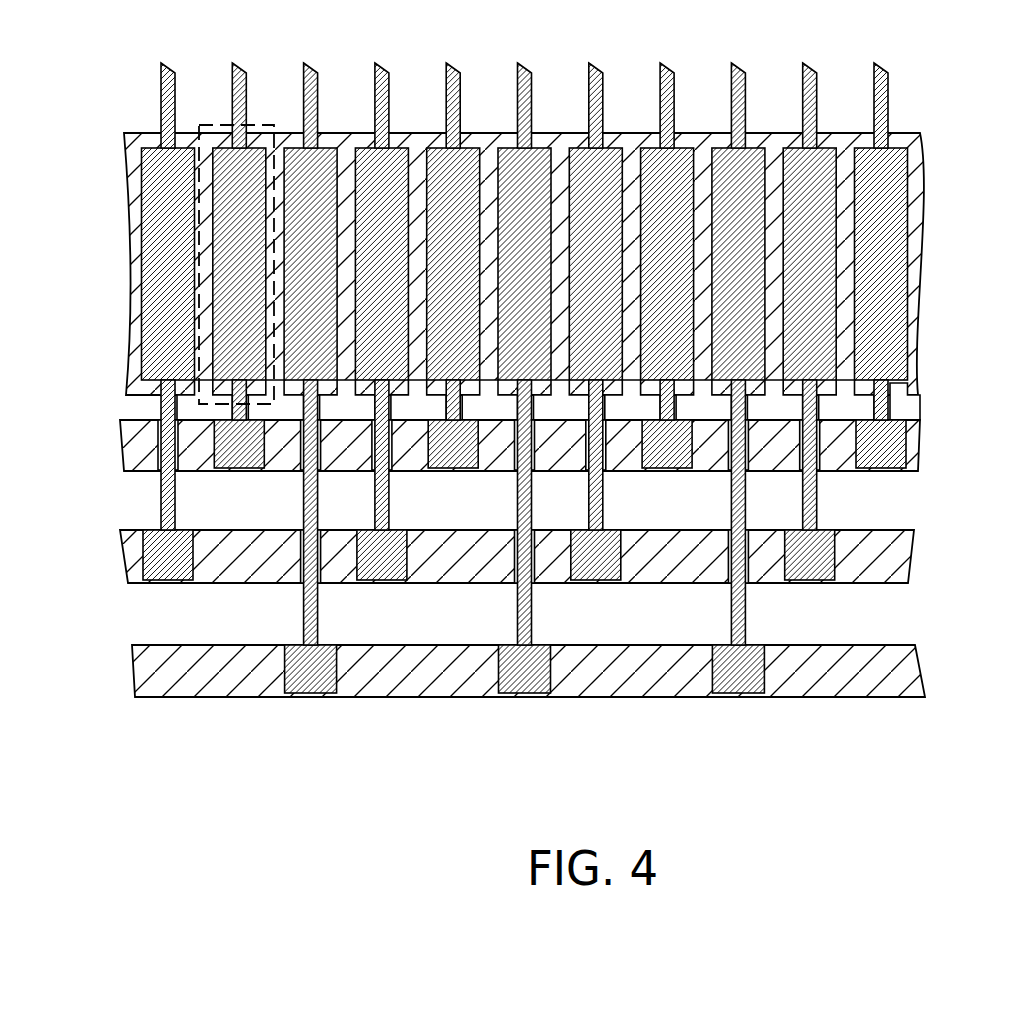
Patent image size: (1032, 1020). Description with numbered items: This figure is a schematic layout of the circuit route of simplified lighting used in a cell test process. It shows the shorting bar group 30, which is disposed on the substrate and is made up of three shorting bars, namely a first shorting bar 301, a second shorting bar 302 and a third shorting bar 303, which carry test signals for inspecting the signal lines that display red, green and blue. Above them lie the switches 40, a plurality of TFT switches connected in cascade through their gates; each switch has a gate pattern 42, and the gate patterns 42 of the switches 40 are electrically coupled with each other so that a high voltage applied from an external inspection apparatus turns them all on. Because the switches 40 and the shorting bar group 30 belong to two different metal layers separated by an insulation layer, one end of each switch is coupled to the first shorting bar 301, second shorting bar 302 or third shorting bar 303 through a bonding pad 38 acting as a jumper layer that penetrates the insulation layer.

The shorting bar group 30 is at (521, 598).
The first shorting bar 301 is at (120, 450).
The second shorting bar 302 is at (120, 557).
The third shorting bar 303 is at (486, 710).
The bonding pad 38 is at (283, 666).
The switches 40 is at (217, 123).
The gate pattern 42 is at (124, 143).